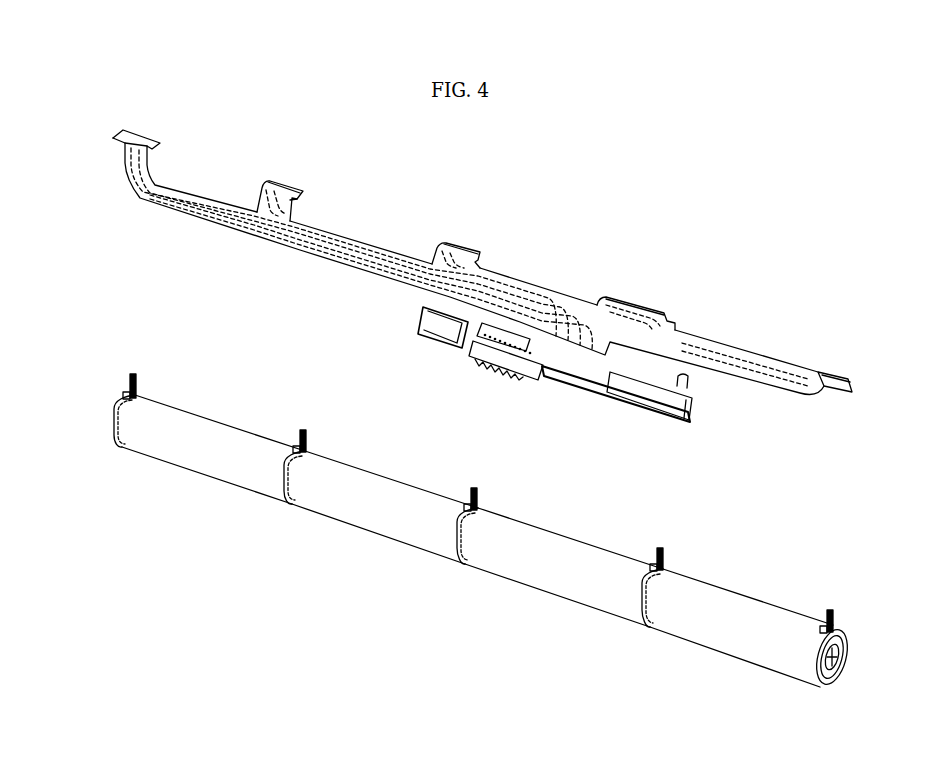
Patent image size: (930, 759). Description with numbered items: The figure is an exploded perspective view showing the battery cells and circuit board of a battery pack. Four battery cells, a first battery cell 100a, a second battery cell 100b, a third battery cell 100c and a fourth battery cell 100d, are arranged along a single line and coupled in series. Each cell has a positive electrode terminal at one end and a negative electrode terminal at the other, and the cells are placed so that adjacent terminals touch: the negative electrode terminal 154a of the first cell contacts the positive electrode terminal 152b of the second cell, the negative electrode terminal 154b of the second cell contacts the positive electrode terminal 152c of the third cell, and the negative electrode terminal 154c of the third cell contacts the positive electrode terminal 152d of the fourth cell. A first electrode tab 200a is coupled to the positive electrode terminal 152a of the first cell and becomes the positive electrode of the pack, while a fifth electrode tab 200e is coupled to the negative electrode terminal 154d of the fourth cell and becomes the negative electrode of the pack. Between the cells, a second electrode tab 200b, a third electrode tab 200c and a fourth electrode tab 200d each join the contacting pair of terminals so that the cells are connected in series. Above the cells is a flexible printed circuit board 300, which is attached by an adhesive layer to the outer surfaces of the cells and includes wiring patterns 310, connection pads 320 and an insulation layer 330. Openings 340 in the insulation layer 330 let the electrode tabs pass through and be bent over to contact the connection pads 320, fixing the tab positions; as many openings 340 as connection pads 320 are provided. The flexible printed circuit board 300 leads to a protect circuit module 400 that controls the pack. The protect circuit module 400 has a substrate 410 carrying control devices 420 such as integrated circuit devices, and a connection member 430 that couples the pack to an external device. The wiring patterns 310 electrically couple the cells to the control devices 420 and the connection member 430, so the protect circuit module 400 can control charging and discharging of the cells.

The first battery cell 100a is at (213, 449).
The second battery cell 100b is at (385, 507).
The third battery cell 100c is at (564, 567).
The fourth battery cell 100d is at (741, 628).
The positive electrode terminal 152a is at (113, 421).
The positive electrode terminal 152b is at (290, 466).
The positive electrode terminal 152c is at (467, 527).
The positive electrode terminal 152d is at (646, 587).
The negative electrode terminal 154a is at (291, 496).
The negative electrode terminal 154b is at (470, 553).
The negative electrode terminal 154c is at (649, 615).
The negative electrode terminal 154d is at (851, 646).
The first electrode tab 200a is at (126, 386).
The second electrode tab 200b is at (301, 430).
The third electrode tab 200c is at (473, 488).
The fourth electrode tab 200d is at (658, 548).
The fifth electrode tab 200e is at (836, 613).
The flexible printed circuit board 300 is at (792, 365).
The wiring patterns 310 is at (727, 368).
The connection pads 320 is at (658, 311).
The insulation layer 330 is at (527, 284).
The openings 340 is at (847, 380).
The protect circuit module 400 is at (700, 413).
The substrate 410 is at (590, 380).
The control devices 420 is at (663, 410).
The connection member 430 is at (500, 360).